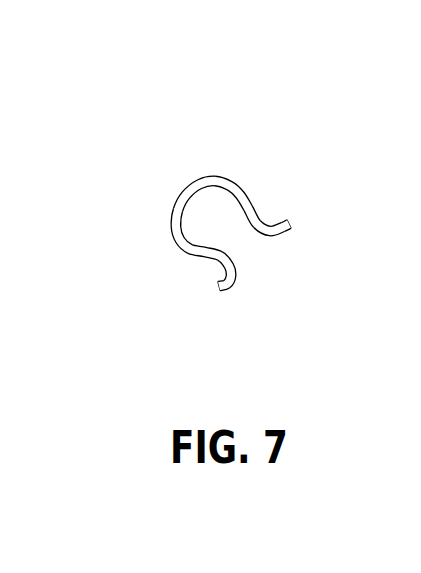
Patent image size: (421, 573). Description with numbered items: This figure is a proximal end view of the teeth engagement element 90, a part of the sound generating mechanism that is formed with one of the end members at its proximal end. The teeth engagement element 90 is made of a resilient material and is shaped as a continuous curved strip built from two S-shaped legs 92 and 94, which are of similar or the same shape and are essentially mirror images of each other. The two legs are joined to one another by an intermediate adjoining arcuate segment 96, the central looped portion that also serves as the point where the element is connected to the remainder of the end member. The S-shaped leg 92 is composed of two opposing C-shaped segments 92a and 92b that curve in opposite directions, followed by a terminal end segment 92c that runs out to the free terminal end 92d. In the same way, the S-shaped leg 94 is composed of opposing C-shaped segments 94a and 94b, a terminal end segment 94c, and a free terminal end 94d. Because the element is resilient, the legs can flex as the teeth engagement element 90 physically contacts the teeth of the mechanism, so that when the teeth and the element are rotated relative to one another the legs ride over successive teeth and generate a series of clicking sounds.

The teeth engagement element 90 is at (195, 113).
The S-shaped leg 92 is at (309, 123).
The C-shaped segment 92a is at (240, 184).
The C-shaped segment 92b is at (260, 221).
The terminal end segment 92c is at (281, 233).
The terminal end 92d is at (290, 220).
The S-shaped leg 94 is at (157, 341).
The C-shaped segment 94a is at (172, 237).
The C-shaped segment 94b is at (209, 258).
The terminal end segment 94c is at (233, 283).
The terminal end 94d is at (210, 290).
The intermediate adjoining arcuate segment 96 is at (190, 183).